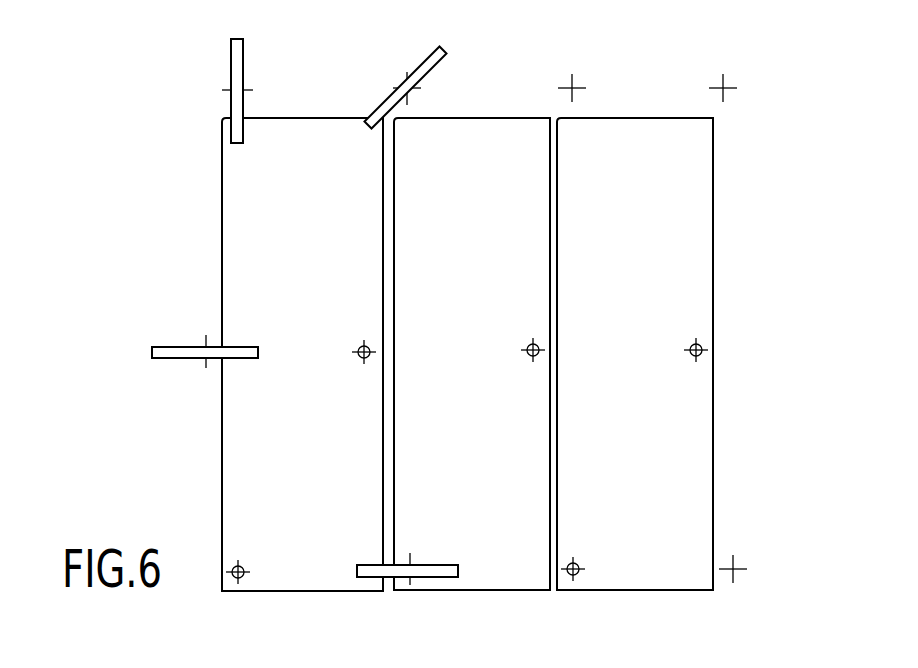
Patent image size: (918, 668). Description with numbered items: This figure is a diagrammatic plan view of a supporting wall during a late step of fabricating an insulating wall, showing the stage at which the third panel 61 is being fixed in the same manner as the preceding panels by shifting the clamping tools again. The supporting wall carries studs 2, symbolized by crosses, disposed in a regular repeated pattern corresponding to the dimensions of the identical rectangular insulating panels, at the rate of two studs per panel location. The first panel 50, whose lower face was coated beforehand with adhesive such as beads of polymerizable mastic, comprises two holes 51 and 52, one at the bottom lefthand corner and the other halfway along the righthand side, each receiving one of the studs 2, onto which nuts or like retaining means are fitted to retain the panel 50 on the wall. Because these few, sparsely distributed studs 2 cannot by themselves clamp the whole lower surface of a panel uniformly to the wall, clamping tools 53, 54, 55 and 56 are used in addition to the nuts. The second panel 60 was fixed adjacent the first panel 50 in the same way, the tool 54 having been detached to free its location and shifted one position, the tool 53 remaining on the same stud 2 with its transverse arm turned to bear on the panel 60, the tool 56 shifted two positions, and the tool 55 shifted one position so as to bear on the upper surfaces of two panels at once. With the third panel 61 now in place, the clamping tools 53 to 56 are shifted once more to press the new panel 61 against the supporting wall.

The stud 2 is at (572, 86).
The first panel 50 is at (669, 380).
The hole 51 is at (577, 573).
The hole 52 is at (702, 345).
The clamping tool 53 is at (231, 60).
The clamping tool 54 is at (170, 347).
The clamping tool 55 is at (436, 577).
The clamping tool 56 is at (425, 65).
The second panel 60 is at (497, 117).
The third panel 61 is at (222, 456).